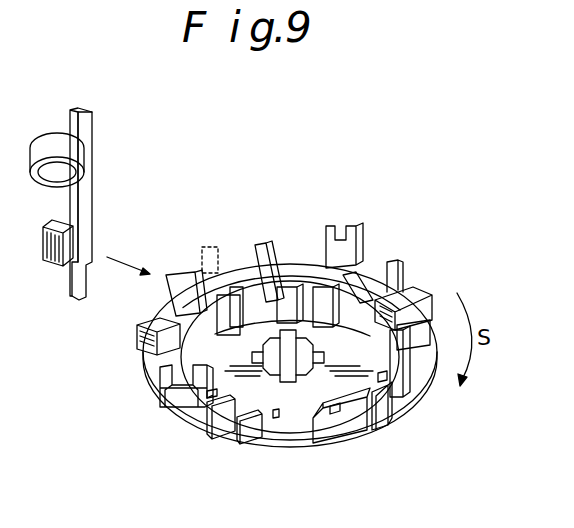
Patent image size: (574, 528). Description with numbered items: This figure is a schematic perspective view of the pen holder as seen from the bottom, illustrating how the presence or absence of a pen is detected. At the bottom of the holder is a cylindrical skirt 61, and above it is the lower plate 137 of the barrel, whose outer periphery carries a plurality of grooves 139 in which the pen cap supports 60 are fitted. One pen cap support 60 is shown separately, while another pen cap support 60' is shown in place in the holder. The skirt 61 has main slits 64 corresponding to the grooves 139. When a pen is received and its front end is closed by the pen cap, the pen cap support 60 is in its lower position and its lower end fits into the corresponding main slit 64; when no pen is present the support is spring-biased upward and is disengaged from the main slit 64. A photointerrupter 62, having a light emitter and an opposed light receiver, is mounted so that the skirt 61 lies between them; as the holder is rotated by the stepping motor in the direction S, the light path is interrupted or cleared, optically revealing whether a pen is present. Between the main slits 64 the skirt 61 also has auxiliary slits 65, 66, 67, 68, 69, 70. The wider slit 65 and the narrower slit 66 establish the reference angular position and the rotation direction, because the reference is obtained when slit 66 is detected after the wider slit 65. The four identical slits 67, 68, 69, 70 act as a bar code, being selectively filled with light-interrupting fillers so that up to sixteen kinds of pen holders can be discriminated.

The pen cap support 60 is at (166, 215).
The contact member 60' is at (372, 236).
The cylindrical skirt 61 is at (400, 393).
The photointerrupter 62 is at (172, 398).
The main slit 64 is at (402, 290).
The auxiliary slit 65 is at (307, 310).
The auxiliary slit 66 is at (203, 287).
The auxiliary slit 67 is at (186, 407).
The auxiliary slit 68 is at (229, 438).
The auxiliary slit 69 is at (308, 445).
The auxiliary slit 70 is at (373, 420).
The lower plate 137 is at (305, 290).
The groove 139 is at (367, 290).